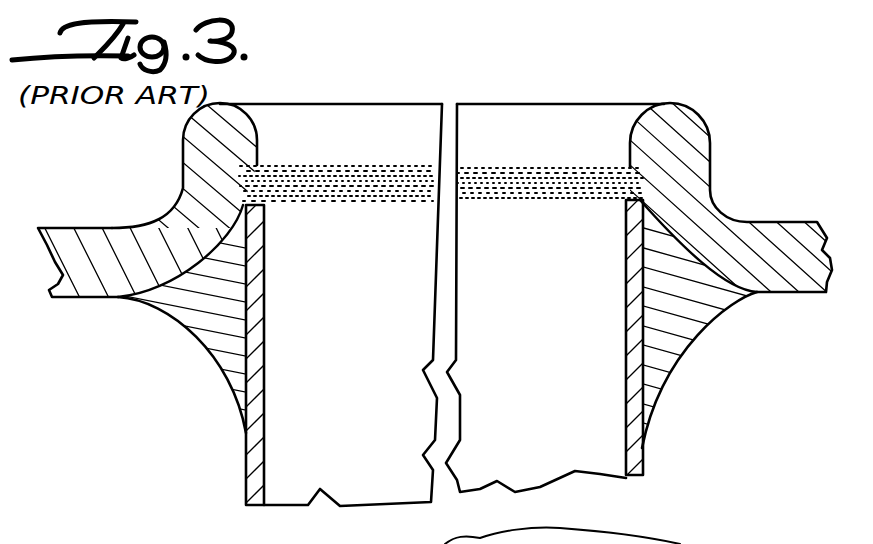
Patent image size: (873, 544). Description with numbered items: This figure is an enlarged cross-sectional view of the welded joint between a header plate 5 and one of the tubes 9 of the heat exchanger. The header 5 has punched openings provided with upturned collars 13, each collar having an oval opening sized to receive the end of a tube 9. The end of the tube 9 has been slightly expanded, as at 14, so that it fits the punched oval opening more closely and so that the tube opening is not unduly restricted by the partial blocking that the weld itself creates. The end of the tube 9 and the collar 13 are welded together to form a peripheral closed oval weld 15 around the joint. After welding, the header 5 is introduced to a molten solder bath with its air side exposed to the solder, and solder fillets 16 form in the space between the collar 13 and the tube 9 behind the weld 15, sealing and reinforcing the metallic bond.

The header plate 5 is at (107, 228).
The tube 9 is at (258, 160).
The upturned collar 13 is at (185, 192).
The expanded tube end 14 is at (647, 186).
The peripheral closed oval weld 15 is at (657, 104).
The solder fillet 16 is at (195, 337).